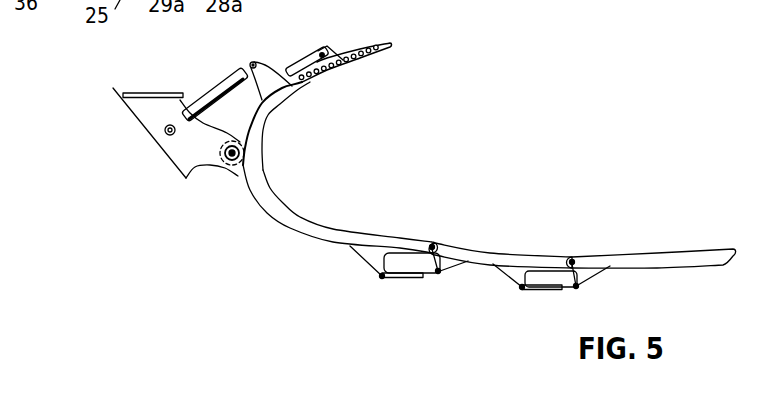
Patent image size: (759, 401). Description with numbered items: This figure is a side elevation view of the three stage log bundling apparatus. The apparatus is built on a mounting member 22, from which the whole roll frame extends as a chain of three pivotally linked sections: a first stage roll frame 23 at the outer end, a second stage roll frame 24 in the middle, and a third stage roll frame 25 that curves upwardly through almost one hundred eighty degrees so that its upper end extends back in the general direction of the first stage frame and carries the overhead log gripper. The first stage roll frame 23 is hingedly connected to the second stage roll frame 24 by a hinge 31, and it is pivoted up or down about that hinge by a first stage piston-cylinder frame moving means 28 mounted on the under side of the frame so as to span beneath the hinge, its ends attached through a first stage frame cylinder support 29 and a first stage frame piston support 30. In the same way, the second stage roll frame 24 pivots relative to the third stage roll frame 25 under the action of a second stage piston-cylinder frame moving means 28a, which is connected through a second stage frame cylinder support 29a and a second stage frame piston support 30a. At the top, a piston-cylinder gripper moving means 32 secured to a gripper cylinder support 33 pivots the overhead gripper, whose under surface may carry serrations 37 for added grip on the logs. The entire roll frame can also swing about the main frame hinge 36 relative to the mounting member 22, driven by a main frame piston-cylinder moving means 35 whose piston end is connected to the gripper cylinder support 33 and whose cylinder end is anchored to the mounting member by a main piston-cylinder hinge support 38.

The mounting member 22 is at (153, 91).
The first stage roll frame 23 is at (658, 256).
The second stage roll frame 24 is at (502, 253).
The third stage roll frame 25 is at (350, 231).
The first stage piston-cylinder frame moving means 28 is at (547, 291).
The second stage piston-cylinder frame moving means 28a is at (410, 280).
The first stage frame cylinder support 29 is at (519, 288).
The second stage frame cylinder support 29a is at (368, 263).
The first stage frame piston support 30 is at (601, 279).
The second stage frame piston support 30a is at (463, 265).
The hinge 31 is at (571, 258).
The piston-cylinder gripper moving means 32 is at (294, 66).
The gripper cylinder support 33 is at (258, 63).
The main frame piston-cylinder moving means 35 is at (214, 85).
The main frame hinge 36 is at (248, 150).
The serrations 37 is at (315, 88).
The main piston-cylinder hinge support 38 is at (166, 137).